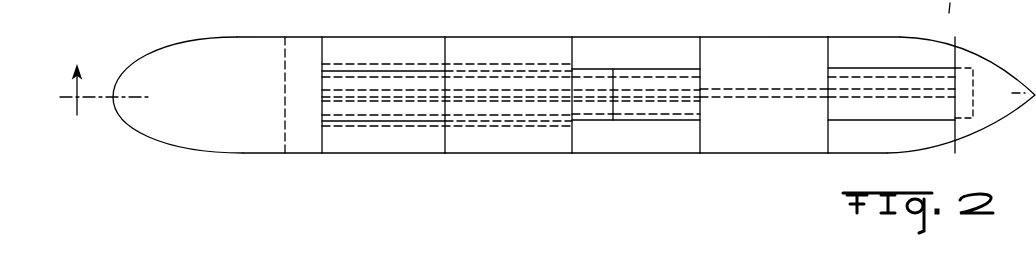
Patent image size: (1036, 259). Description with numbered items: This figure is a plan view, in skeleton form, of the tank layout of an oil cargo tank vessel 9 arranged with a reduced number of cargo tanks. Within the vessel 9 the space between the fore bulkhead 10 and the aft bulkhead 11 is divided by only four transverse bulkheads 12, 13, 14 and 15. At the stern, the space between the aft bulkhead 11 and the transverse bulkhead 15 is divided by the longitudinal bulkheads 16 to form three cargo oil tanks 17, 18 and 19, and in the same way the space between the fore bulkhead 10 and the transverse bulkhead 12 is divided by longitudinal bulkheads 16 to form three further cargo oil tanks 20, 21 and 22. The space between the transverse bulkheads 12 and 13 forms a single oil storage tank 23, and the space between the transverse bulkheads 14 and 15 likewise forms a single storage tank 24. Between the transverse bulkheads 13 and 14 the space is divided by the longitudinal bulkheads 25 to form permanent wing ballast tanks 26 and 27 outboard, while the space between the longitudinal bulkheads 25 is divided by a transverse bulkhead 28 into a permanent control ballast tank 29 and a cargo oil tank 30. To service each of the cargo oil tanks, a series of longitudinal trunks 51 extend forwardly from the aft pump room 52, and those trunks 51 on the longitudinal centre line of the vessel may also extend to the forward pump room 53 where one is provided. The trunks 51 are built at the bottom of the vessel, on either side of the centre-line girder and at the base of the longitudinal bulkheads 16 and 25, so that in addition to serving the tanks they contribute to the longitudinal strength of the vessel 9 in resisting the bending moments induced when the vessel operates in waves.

The vessel 9 is at (362, 158).
The fore bulkhead 10 is at (963, 133).
The aft bulkhead 11 is at (320, 137).
The transverse bulkhead 12 is at (830, 135).
The transverse bulkhead 13 is at (703, 137).
The transverse bulkhead 14 is at (572, 43).
The transverse bulkhead 15 is at (447, 137).
The longitudinal bulkheads 16 is at (390, 123).
The cargo oil tank 17 is at (418, 50).
The cargo oil tank 18 is at (387, 84).
The cargo oil tank 19 is at (422, 141).
The cargo oil tank 20 is at (845, 43).
The cargo oil tank 21 is at (900, 47).
The cargo oil tank 22 is at (908, 140).
The oil storage tank 23 is at (772, 138).
The storage tank 24 is at (502, 143).
The longitudinal bulkheads 25 is at (665, 120).
The permanent wing ballast tank 26 is at (612, 48).
The permanent wing ballast tank 27 is at (663, 142).
The transverse bulkhead 28 is at (615, 86).
The permanent control ballast tank 29 is at (590, 107).
The cargo oil tank 30 is at (643, 105).
The longitudinal trunks 51 is at (499, 72).
The aft pump room 52 is at (295, 102).
The forward pump room 53 is at (967, 97).